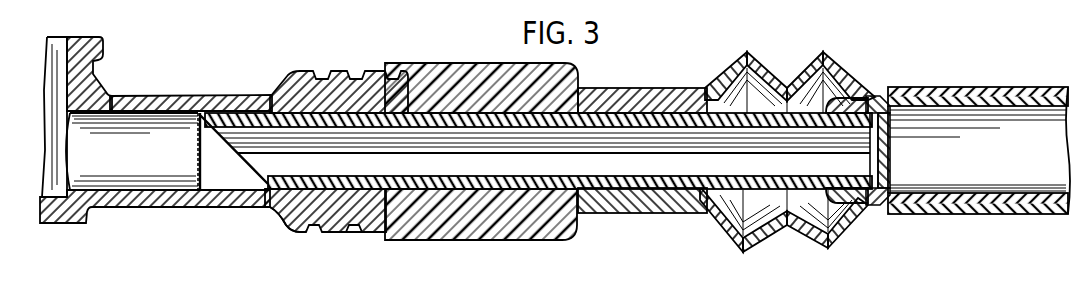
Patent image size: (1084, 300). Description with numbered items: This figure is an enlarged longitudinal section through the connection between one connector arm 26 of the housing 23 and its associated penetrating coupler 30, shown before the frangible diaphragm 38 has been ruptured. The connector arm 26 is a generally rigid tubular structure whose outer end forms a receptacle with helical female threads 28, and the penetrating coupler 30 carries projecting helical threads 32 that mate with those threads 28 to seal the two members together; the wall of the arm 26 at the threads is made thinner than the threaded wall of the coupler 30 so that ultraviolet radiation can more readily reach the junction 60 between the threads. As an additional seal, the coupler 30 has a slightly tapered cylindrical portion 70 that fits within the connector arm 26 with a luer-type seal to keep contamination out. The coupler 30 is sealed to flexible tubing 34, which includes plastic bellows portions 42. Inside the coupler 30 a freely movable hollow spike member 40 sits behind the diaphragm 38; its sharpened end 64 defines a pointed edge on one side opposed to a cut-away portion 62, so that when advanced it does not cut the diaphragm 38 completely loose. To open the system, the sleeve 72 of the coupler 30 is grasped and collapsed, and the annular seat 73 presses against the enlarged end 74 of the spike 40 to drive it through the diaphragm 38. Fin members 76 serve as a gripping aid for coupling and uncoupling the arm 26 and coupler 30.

The housing 23 is at (92, 74).
The connector arm 26 is at (151, 208).
The helical female threads 28 is at (326, 90).
The penetrating coupler 30 is at (581, 66).
The helical threads 32 is at (306, 214).
The flexible tubing 34 is at (990, 88).
The diaphragm 38 is at (198, 157).
The hollow spike member 40 is at (471, 125).
The plastic bellows portions 42 is at (758, 66).
The junction 60 is at (348, 234).
The cut-away portion 62 is at (275, 212).
The sharpened end 64 is at (210, 112).
The tapered cylindrical portion 70 is at (223, 210).
The sleeve 72 is at (908, 88).
The annular seat 73 is at (895, 212).
The enlarged end 74 is at (853, 215).
The fin members 76 is at (505, 241).